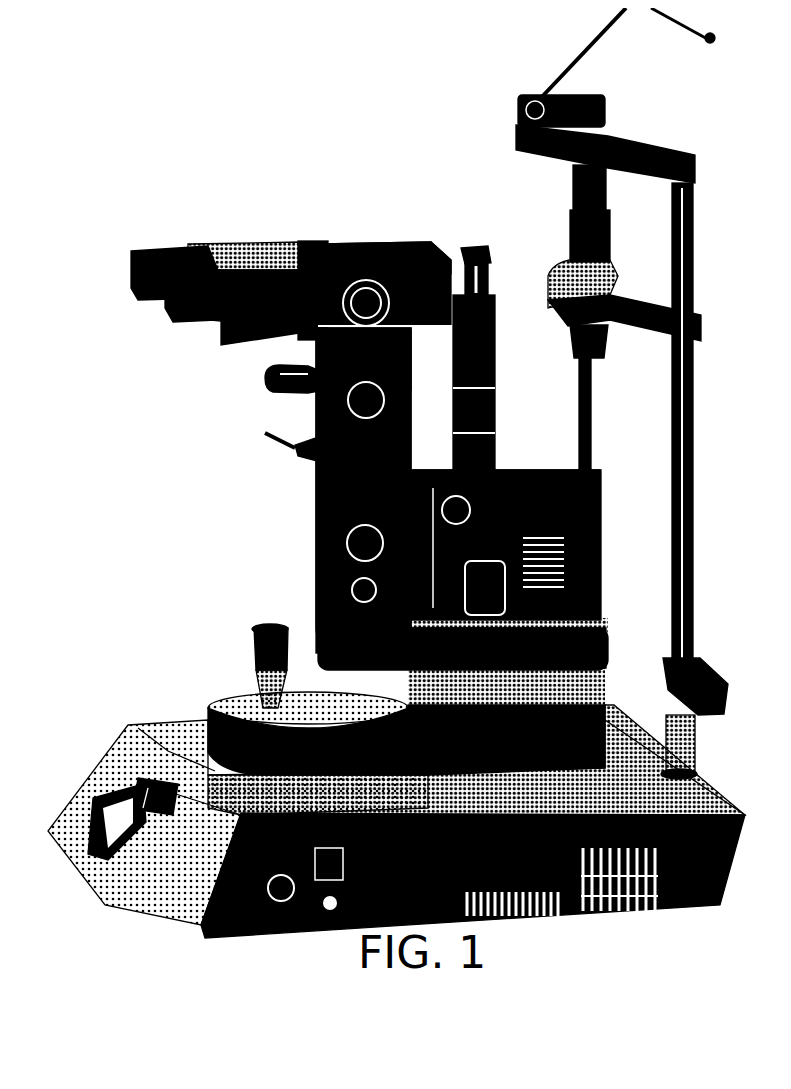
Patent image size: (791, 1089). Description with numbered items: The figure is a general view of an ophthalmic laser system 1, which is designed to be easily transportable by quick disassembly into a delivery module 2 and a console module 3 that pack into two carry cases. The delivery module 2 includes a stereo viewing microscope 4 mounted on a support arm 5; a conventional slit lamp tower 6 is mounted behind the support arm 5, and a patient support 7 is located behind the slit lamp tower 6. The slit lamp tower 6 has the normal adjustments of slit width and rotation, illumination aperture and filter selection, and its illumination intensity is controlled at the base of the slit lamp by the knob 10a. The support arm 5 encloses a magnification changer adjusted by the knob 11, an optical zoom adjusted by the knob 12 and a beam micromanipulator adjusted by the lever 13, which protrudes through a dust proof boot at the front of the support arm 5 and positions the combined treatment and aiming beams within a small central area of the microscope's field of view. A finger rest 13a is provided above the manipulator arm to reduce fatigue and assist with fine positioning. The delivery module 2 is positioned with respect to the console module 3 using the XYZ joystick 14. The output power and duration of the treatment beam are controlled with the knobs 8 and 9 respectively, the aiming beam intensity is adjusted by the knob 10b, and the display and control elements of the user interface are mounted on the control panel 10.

The ophthalmic laser system 1 is at (410, 167).
The delivery module 2 is at (307, 480).
The console module 3 is at (155, 710).
The stereo viewing microscope 4 is at (230, 232).
The support arm 5 is at (395, 400).
The slit lamp tower 6 is at (472, 237).
The patient support 7 is at (678, 137).
The knob 8 is at (313, 532).
The knob 9 is at (313, 582).
The control panel 10 is at (103, 842).
The knob 10a is at (357, 697).
The knob 10b is at (450, 688).
The knob 11 is at (353, 272).
The knob 12 is at (340, 405).
The lever 13 is at (257, 367).
The finger rest 13a is at (257, 433).
The XYZ joystick 14 is at (240, 623).